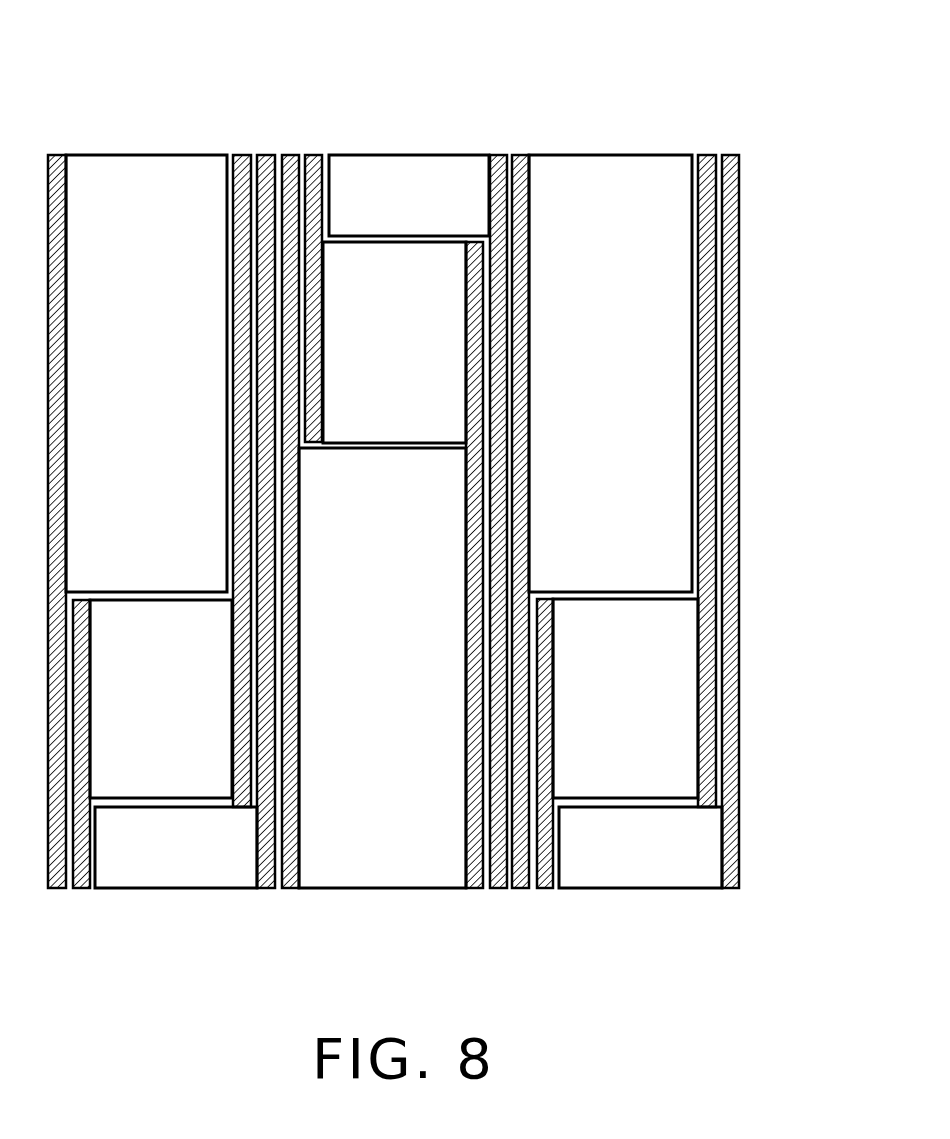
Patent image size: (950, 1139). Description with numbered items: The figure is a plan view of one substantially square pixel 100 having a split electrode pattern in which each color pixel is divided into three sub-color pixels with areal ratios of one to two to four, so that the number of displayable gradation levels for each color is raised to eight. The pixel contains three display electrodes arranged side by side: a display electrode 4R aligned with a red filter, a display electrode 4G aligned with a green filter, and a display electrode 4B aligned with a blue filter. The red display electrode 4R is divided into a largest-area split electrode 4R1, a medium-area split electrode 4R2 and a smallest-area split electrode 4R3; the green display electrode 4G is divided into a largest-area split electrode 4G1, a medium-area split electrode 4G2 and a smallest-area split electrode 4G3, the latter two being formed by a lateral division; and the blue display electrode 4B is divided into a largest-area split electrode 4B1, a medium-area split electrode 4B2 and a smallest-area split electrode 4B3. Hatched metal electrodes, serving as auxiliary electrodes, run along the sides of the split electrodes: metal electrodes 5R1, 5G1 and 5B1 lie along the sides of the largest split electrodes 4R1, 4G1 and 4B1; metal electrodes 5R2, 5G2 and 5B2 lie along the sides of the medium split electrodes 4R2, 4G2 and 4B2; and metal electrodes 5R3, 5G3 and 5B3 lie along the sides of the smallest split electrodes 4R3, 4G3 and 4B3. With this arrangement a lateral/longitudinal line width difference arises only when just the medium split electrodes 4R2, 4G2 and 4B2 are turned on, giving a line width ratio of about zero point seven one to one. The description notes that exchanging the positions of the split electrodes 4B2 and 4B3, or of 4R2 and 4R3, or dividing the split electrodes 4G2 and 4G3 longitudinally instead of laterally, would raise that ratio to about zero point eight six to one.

The display device 100 is at (776, 154).
The display electrode 4R is at (136, 120).
The display electrode 4G is at (418, 110).
The display electrode 4B is at (624, 115).
The largest-area split electrode 4R1 is at (146, 373).
The medium-area split electrode 4R2 is at (161, 699).
The smallest-area split electrode 4R3 is at (176, 847).
The largest-area split electrode 4G1 is at (382, 668).
The medium-area split electrode 4G2 is at (394, 342).
The smallest-area split electrode 4G3 is at (409, 195).
The largest-area split electrode 4B1 is at (610, 373).
The medium-area split electrode 4B2 is at (625, 698).
The smallest-area split electrode 4B3 is at (640, 847).
The metal electrode 5R1 is at (57, 153).
The metal electrode 5R2 is at (238, 153).
The metal electrode 5R3 is at (267, 153).
The metal electrode 5G1 is at (293, 153).
The metal electrode 5G2 is at (313, 153).
The metal electrode 5G3 is at (498, 153).
The metal electrode 5B1 is at (522, 153).
The metal electrode 5B2 is at (710, 153).
The metal electrode 5B3 is at (728, 153).